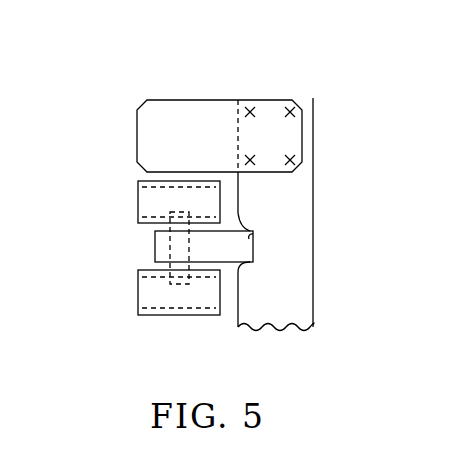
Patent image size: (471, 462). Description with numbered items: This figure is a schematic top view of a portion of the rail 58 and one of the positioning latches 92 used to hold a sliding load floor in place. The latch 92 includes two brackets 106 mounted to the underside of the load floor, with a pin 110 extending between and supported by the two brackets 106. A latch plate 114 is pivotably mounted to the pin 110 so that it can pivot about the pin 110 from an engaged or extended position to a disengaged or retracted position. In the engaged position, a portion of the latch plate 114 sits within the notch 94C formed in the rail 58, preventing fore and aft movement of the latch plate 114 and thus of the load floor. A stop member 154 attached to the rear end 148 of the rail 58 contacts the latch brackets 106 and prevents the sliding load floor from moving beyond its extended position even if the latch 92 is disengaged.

The rear end 148 is at (106, 118).
The stop member 154 is at (190, 100).
The brackets 106 is at (137, 203).
The pin 110 is at (153, 263).
The rail 58 is at (305, 191).
The notch 94C is at (255, 230).
The latch 92 is at (167, 333).
The latch plate 114 is at (233, 265).